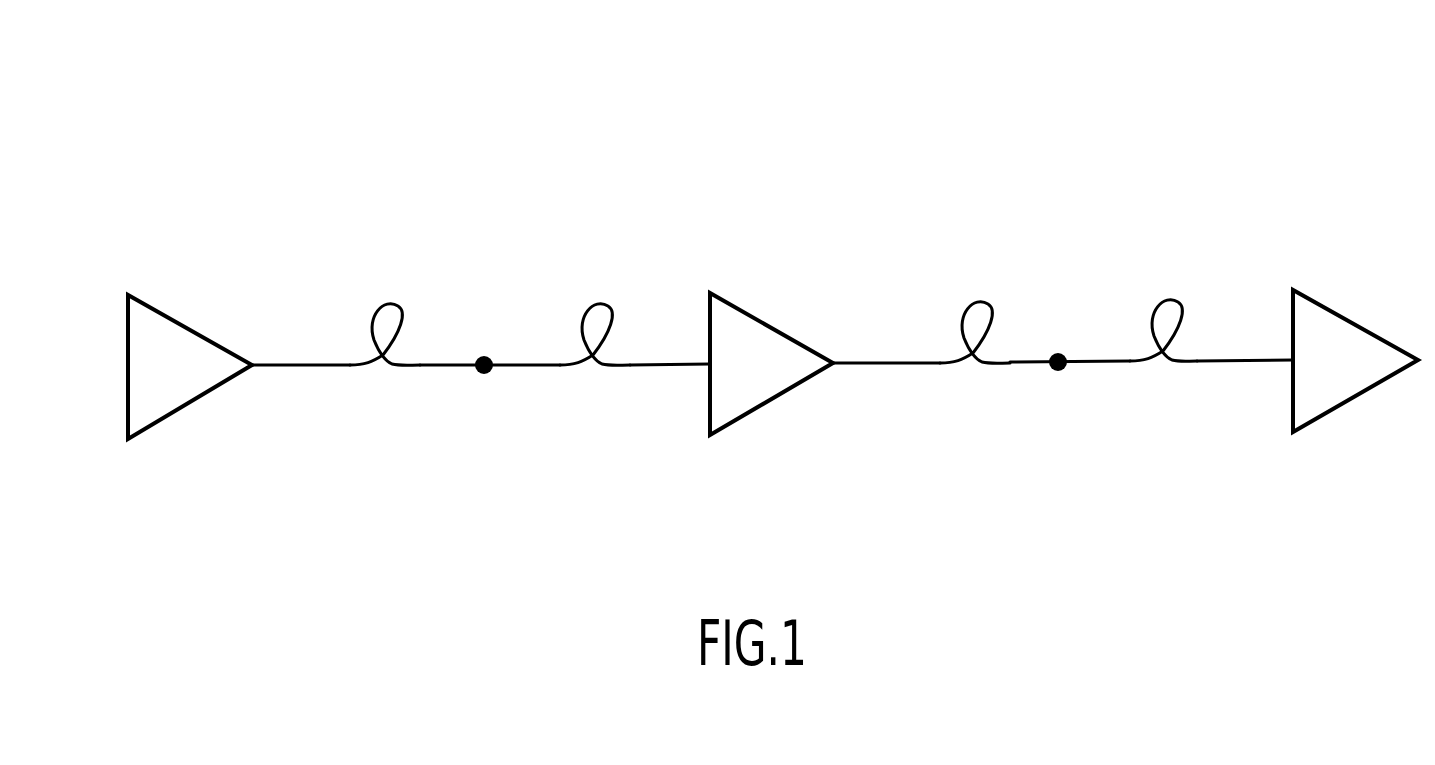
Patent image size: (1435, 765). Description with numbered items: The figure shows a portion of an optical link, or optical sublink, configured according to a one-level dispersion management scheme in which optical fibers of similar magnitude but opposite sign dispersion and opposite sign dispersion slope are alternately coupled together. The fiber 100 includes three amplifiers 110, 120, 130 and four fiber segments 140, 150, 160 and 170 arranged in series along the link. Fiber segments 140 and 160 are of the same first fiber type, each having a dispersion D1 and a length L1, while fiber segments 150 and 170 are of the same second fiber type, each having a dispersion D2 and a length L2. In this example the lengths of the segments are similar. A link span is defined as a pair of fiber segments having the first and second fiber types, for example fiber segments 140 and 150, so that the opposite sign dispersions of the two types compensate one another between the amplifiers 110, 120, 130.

The fiber 100 is at (1052, 118).
The amplifier 110 is at (183, 405).
The amplifier 120 is at (768, 402).
The amplifier 130 is at (1345, 403).
The fiber segment 140 is at (383, 375).
The fiber segment 150 is at (583, 375).
The fiber segment 160 is at (963, 371).
The fiber segment 170 is at (1168, 371).